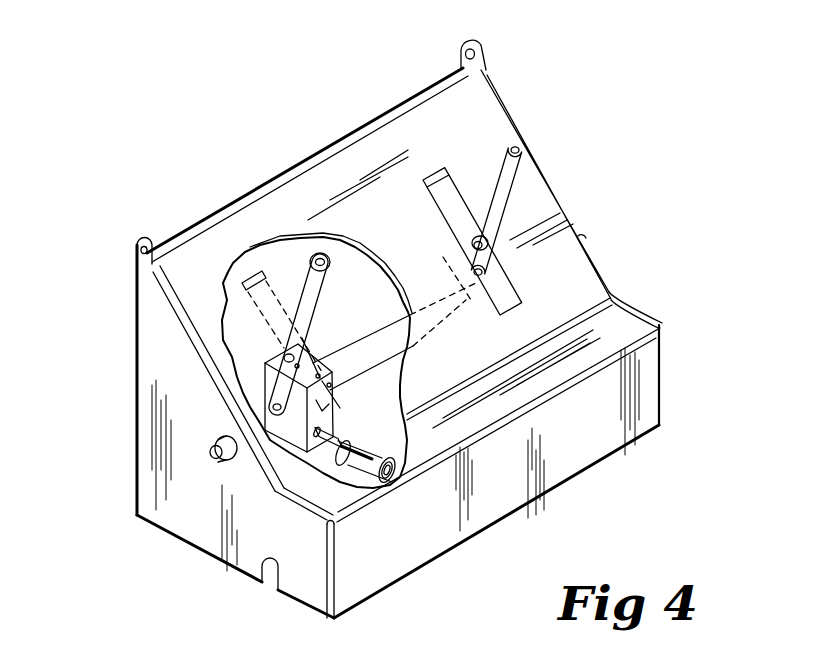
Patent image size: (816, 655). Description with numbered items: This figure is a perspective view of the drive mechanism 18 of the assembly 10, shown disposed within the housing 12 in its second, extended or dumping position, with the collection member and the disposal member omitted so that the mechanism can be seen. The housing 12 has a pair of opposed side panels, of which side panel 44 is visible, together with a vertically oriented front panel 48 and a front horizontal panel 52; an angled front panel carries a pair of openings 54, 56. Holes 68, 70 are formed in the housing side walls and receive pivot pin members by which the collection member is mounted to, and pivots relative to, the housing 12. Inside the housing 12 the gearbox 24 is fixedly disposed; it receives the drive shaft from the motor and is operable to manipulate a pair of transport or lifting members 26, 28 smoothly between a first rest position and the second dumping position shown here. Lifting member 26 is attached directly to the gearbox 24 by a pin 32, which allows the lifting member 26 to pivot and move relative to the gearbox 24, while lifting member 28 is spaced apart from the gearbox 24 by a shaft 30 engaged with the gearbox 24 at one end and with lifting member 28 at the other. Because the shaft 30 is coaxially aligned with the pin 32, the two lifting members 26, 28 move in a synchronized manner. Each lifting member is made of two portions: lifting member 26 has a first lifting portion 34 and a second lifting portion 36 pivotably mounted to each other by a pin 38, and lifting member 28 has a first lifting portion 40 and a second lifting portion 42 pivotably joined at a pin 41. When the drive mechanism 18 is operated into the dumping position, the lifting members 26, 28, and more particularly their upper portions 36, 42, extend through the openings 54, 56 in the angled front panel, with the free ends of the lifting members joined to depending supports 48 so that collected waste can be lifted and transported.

The assembly 10 is at (347, 80).
The housing 12 is at (653, 381).
The drive mechanism 18 is at (241, 327).
The gearbox 24 is at (290, 437).
The lifting member 26 is at (308, 278).
The lifting member 28 is at (483, 170).
The shaft 30 is at (372, 352).
The pin 32 is at (270, 410).
The first lifting portion 34 is at (280, 388).
The second lifting portion 36 is at (293, 260).
The pin 38 is at (282, 358).
The first lifting portion 40 is at (481, 263).
The pin 41 is at (507, 240).
The second lifting portion 42 is at (500, 197).
The side panel 44 is at (152, 505).
The front panel 48 is at (650, 415).
The front horizontal panel 52 is at (631, 317).
The opening 54 is at (232, 262).
The opening 56 is at (473, 300).
The hole 68 is at (137, 258).
The hole 70 is at (475, 42).